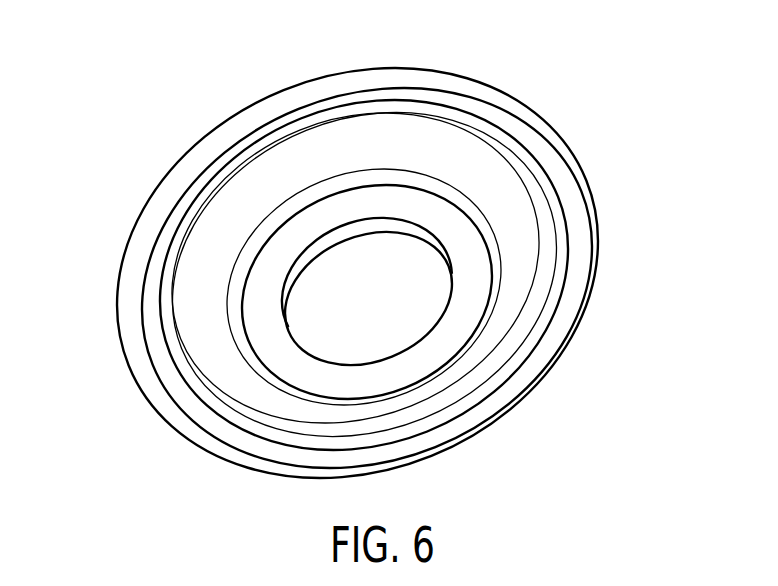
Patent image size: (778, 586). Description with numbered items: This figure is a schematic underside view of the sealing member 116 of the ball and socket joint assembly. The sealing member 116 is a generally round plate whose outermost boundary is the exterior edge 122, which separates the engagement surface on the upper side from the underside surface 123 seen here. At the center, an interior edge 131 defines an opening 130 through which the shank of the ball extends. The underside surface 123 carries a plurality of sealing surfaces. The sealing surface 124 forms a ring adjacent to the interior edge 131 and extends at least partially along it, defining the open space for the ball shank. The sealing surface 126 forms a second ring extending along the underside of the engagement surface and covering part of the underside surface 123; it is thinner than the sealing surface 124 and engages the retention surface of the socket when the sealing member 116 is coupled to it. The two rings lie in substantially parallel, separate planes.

The sealing member 116 is at (122, 139).
The exterior edge 122 is at (540, 376).
The underside surface 123 is at (125, 287).
The sealing surface 124 is at (401, 199).
The sealing surface 126 is at (549, 141).
The opening 130 is at (427, 302).
The interior edge 131 is at (443, 267).